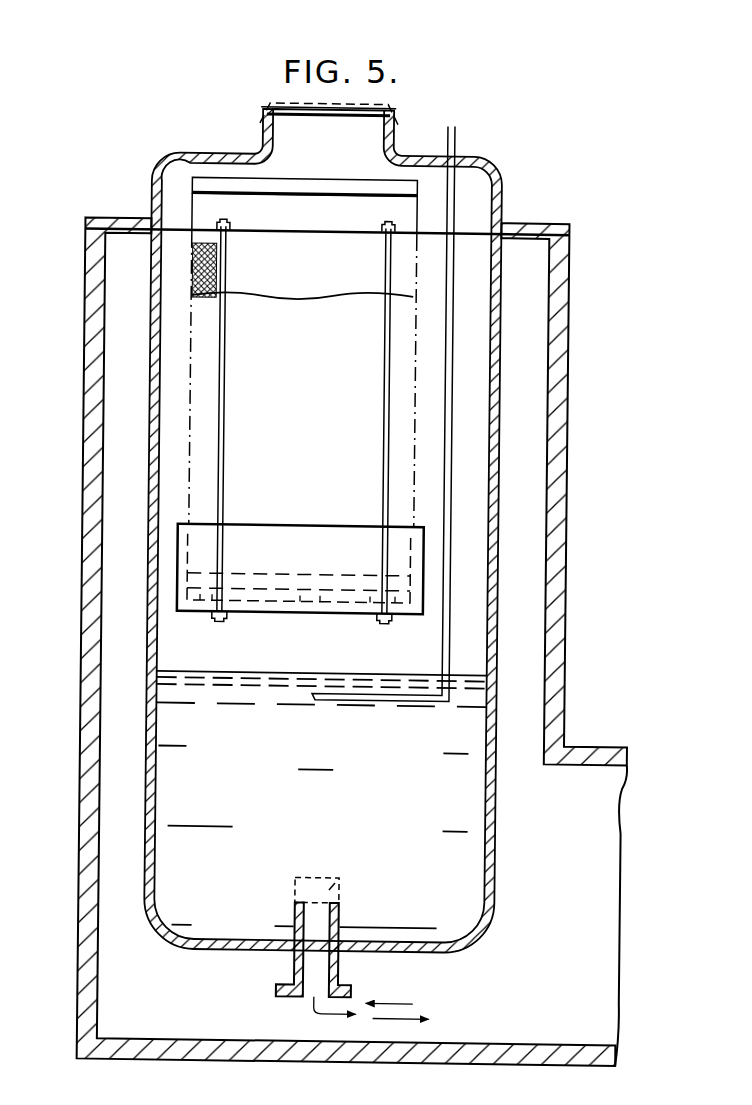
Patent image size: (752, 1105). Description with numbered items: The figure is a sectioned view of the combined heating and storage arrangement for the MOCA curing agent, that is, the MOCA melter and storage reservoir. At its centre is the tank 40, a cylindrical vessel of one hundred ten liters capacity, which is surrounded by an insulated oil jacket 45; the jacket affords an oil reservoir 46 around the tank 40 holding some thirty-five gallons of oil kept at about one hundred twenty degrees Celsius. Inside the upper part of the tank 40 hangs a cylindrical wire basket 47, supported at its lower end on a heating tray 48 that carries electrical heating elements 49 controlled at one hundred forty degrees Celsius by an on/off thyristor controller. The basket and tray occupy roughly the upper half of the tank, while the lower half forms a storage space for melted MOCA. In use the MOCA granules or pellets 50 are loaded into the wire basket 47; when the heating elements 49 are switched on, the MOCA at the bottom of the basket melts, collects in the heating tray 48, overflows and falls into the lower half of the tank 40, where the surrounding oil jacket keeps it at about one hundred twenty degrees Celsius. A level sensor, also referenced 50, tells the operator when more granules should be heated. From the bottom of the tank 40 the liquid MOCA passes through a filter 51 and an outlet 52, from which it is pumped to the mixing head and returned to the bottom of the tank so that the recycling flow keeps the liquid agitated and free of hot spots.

The tank 40 is at (469, 200).
The insulated oil jacket 45 is at (90, 611).
The oil reservoir 46 is at (118, 526).
The wire basket 47 is at (189, 347).
The heating tray 48 is at (233, 568).
The electrical heating elements 49 is at (305, 593).
The MOCA granules or pellets 50 is at (318, 421).
The filter 51 is at (342, 878).
The outlet 52 is at (327, 955).